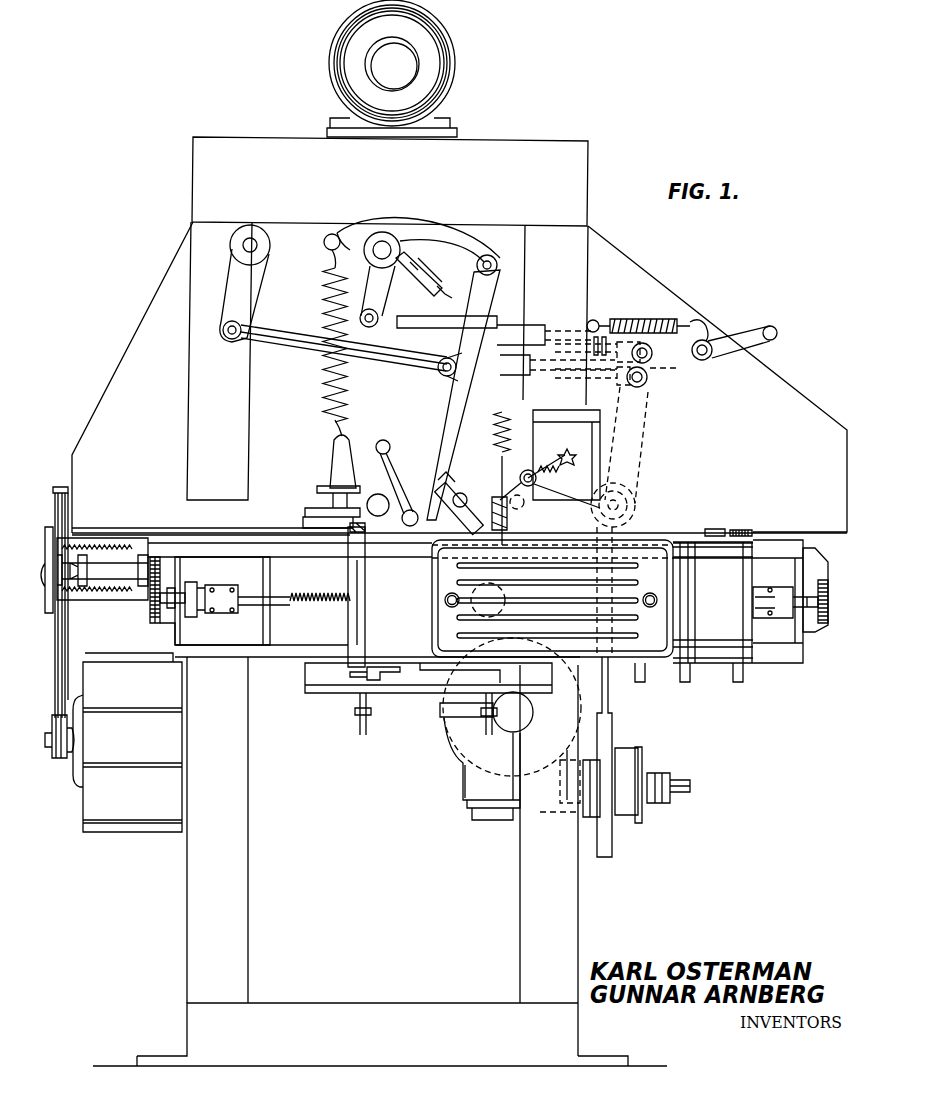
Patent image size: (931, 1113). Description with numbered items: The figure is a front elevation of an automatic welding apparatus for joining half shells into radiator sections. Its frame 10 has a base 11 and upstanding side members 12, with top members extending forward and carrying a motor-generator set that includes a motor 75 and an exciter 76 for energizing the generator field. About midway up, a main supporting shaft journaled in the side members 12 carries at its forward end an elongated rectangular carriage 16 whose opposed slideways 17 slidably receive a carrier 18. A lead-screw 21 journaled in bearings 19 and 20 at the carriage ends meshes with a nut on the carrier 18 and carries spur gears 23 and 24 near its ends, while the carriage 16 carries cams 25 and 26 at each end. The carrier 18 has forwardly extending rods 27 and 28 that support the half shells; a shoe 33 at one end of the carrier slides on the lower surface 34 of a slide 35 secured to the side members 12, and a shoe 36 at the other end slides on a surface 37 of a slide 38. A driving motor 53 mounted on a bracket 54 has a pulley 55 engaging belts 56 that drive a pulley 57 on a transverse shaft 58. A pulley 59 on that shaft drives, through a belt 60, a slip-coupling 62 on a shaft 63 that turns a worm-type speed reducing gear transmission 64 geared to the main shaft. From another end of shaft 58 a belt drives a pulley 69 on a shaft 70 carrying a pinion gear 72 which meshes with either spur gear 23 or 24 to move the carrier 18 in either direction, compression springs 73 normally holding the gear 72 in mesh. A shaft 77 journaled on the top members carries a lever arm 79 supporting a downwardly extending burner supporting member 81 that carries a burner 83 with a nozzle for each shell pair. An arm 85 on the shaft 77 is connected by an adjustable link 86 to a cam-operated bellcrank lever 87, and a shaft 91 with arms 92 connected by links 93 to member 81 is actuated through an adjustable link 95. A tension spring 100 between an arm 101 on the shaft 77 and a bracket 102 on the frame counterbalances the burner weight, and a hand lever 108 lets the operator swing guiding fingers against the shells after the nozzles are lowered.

The frame 10 is at (260, 887).
The base 11 is at (395, 1003).
The upstanding side members 12 is at (519, 884).
The carriage 16 is at (794, 675).
The slideways 17 is at (790, 540).
The carrier 18 is at (344, 628).
The bearing 19 is at (199, 588).
The bearing 20 is at (783, 588).
The lead-screw 21 is at (305, 608).
The spur gear 23 is at (150, 606).
The spur gear 24 is at (830, 612).
The cam 25 is at (160, 637).
The cam 26 is at (818, 565).
The rod 27 is at (445, 598).
The rod 28 is at (657, 597).
The shoe 33 is at (724, 532).
The lower surface 34 is at (762, 534).
The slide 35 is at (847, 430).
The shoe 36 is at (359, 533).
The surface 37 is at (130, 537).
The slide 38 is at (75, 452).
The driving motor 53 is at (80, 784).
The bracket 54 is at (125, 833).
The pulley 55 is at (58, 760).
The belts 56 is at (67, 656).
The pulley 57 is at (66, 486).
The shaft 58 is at (237, 557).
The pulley 59 is at (622, 538).
The belt 60 is at (609, 704).
The slip-coupling 62 is at (644, 755).
The shaft 63 is at (662, 773).
The speed reducing gear transmission 64 is at (443, 737).
The pulley 69 is at (56, 535).
The shaft 70 is at (46, 582).
The pinion gear 72 is at (155, 558).
The compression springs 73 is at (100, 540).
The motor 75 is at (456, 68).
The exciter 76 is at (404, 73).
The shaft 77 is at (382, 268).
The lever arm 79 is at (487, 255).
The burner supporting member 81 is at (430, 392).
The burner 83 is at (456, 492).
The arm 85 is at (398, 270).
The adjustable link 86 is at (445, 292).
The bellcrank lever 87 is at (666, 411).
The shaft 91 is at (243, 243).
The arms 92 is at (258, 285).
The links 93 is at (308, 344).
The adjustable link 95 is at (293, 308).
The tension spring 100 is at (327, 392).
The arm 101 is at (324, 240).
The bracket 102 is at (330, 468).
The hand lever 108 is at (395, 490).